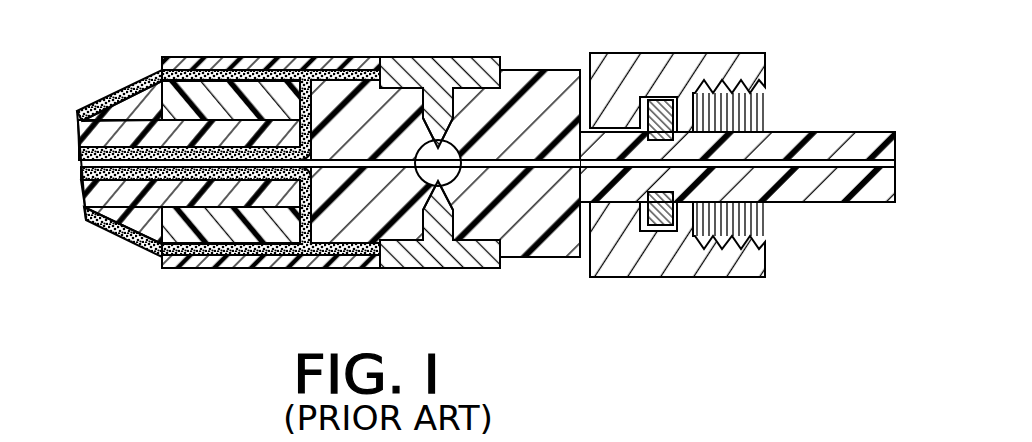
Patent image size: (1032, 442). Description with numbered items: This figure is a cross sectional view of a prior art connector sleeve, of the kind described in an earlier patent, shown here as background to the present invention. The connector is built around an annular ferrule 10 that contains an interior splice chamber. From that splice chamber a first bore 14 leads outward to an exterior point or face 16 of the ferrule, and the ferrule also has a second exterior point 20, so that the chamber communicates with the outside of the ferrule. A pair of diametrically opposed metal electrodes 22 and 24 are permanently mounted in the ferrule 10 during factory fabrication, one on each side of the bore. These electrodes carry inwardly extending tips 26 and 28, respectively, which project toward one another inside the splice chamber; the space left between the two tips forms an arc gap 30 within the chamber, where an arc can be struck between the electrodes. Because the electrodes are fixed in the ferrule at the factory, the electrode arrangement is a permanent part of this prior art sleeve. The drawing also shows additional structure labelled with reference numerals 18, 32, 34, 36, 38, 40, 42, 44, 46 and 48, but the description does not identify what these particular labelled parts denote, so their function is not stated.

The annular ferrule 10 is at (807, 132).
The first bore 14 is at (837, 169).
The exterior point or face 16 is at (897, 150).
The bore 18 is at (388, 165).
The second exterior point 20 is at (317, 152).
The metal electrode 22 is at (458, 72).
The metal electrode 24 is at (463, 253).
The inwardly extending tip 26 is at (434, 105).
The inwardly extending tip 28 is at (436, 204).
The arc gap 30 is at (437, 160).
The nut 32 is at (642, 53).
The threads 34 is at (705, 76).
The seal 36 is at (533, 137).
The tip 38 is at (102, 95).
The electrode 40 is at (282, 231).
The ceramic insert 42 is at (157, 196).
The insulating sheath 44 is at (161, 159).
The lower sheath 46 is at (81, 176).
The outer tube 48 is at (220, 261).